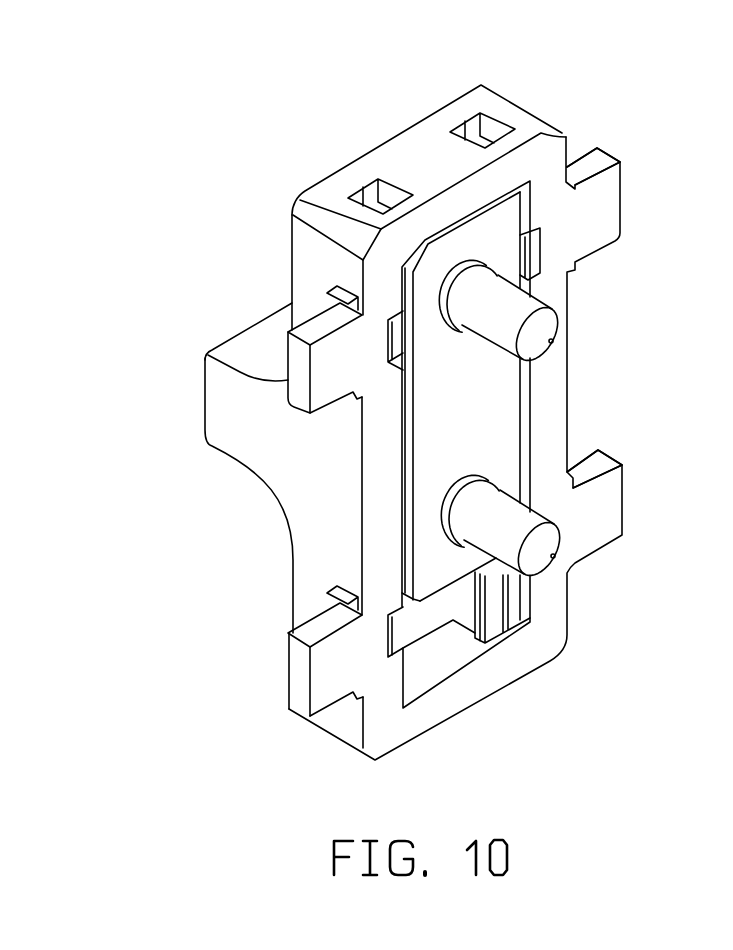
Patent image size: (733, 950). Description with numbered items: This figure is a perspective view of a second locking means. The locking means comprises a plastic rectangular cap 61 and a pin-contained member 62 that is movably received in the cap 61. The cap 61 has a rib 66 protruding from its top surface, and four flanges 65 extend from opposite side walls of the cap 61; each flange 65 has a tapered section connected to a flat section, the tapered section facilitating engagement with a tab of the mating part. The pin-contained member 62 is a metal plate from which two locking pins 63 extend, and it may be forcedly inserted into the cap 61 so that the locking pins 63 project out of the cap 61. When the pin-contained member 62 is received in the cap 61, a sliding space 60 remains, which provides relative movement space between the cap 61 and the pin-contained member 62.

The sliding space 60 is at (472, 647).
The cap 61 is at (520, 108).
The pin-contained member 62 is at (482, 409).
The locking pin 63 is at (542, 326).
The flange 65 is at (608, 185).
The rib 66 is at (207, 385).